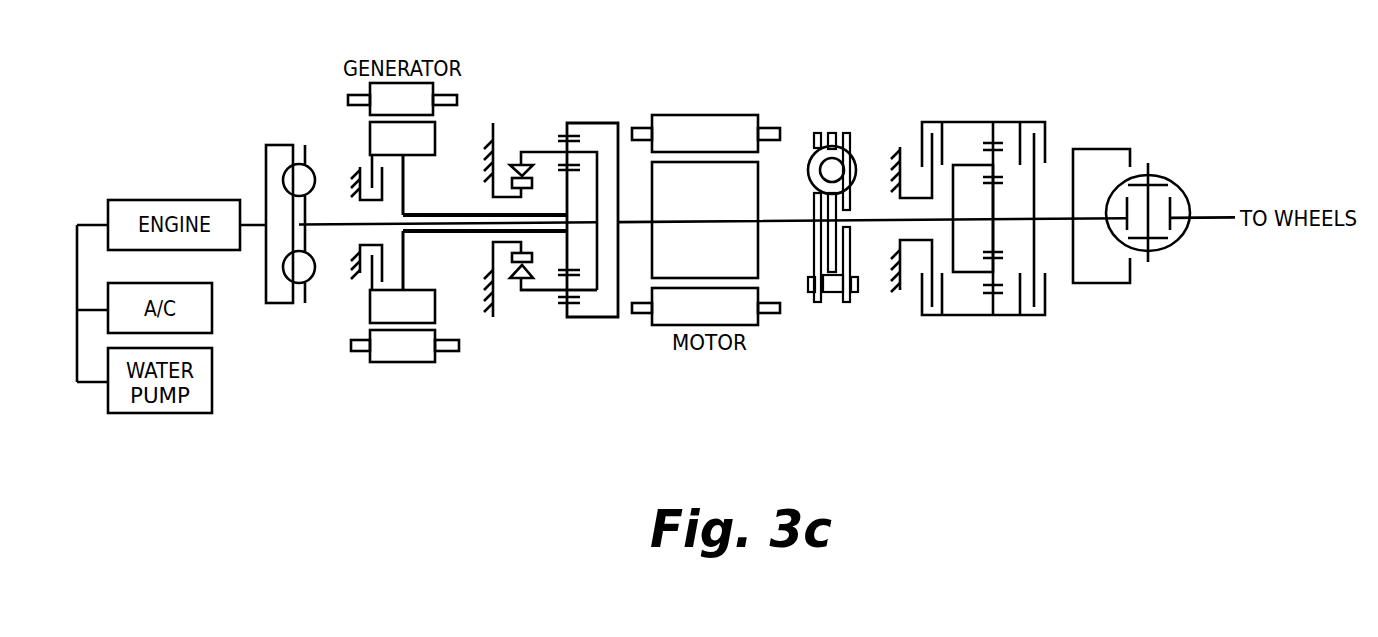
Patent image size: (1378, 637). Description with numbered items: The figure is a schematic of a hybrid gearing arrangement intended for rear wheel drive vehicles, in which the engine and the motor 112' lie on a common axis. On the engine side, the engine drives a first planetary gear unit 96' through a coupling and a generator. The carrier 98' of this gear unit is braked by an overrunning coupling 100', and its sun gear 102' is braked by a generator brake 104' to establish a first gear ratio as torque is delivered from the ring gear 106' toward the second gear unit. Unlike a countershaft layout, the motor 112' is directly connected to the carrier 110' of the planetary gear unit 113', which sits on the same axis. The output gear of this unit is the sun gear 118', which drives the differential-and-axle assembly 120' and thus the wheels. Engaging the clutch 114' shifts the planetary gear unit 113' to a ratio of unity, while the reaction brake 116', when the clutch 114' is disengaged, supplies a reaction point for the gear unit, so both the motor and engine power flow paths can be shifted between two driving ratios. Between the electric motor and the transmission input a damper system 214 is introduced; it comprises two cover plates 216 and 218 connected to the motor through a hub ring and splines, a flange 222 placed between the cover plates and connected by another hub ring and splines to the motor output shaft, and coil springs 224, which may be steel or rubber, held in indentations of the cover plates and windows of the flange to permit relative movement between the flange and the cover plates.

The first planetary gear unit 96' is at (540, 170).
The carrier 98' is at (558, 338).
The overrunning coupling 100' is at (537, 314).
The sun gear 102' is at (612, 184).
The generator brake 104' is at (331, 257).
The ring gear 106' is at (583, 110).
The carrier 110' is at (975, 275).
The motor 112' is at (609, 327).
The planetary gear unit 113' is at (946, 259).
The clutch 114' is at (1055, 173).
The reaction brake 116' is at (939, 173).
The sun gear 118' is at (1065, 207).
The differential-and-axle assembly 120' is at (1165, 230).
The damper system 214 is at (833, 300).
The cover plate 216 is at (851, 270).
The cover plate 218 is at (799, 217).
The flange 222 is at (830, 264).
The coil springs 224 is at (807, 173).